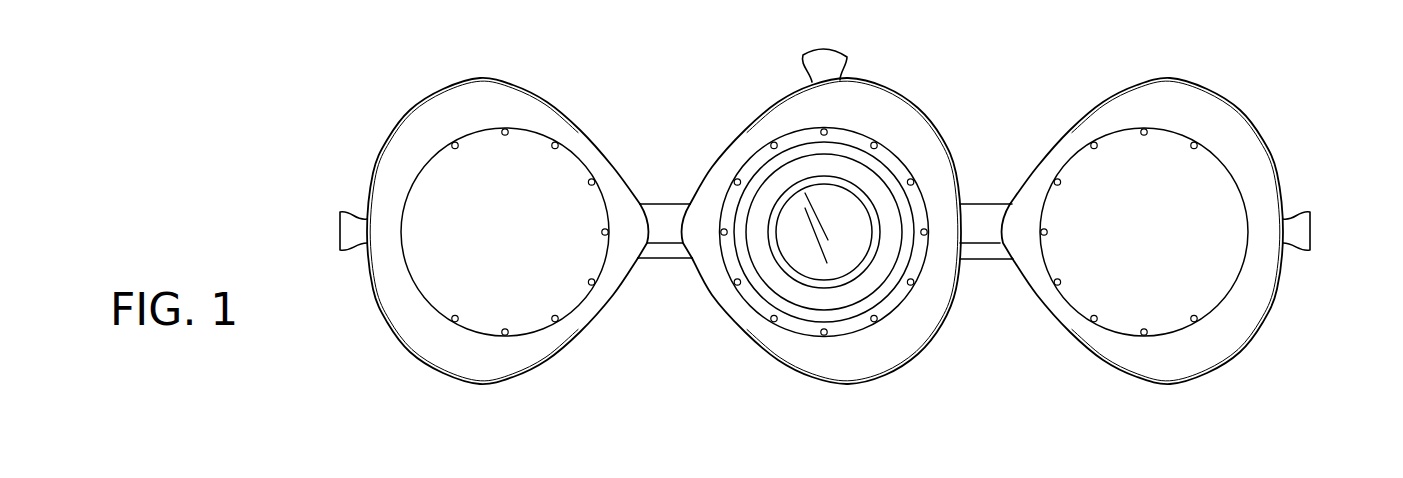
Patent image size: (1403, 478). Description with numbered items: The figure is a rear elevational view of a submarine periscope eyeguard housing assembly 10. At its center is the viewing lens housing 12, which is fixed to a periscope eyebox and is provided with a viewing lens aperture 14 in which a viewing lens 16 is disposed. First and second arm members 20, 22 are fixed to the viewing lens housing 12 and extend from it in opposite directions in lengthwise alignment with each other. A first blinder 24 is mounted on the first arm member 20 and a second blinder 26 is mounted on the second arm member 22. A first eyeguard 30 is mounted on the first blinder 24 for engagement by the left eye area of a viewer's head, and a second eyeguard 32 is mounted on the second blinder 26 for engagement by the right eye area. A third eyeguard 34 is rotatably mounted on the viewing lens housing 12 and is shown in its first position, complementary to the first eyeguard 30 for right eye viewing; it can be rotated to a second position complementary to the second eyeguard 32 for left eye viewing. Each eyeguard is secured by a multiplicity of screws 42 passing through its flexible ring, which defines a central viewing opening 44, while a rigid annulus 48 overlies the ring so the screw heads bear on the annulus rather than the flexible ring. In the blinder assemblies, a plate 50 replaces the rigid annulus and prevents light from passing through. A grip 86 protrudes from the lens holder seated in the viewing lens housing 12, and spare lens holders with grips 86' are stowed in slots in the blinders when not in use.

The submarine periscope eyeguard housing assembly 10 is at (640, 406).
The viewing lens housing 12 is at (875, 404).
The viewing lens aperture 14 is at (842, 192).
The viewing lens 16 is at (853, 223).
The first arm member 20 is at (667, 203).
The second arm member 22 is at (985, 244).
The first blinder 24 is at (372, 362).
The second blinder 26 is at (1268, 363).
The first eyeguard 30 is at (397, 115).
The second eyeguard 32 is at (1275, 147).
The third eyeguard 34 is at (917, 103).
The screws 42 is at (556, 322).
The central viewing opening 44 is at (795, 307).
The rigid annulus 48 is at (850, 135).
The plate 50 is at (522, 185).
The grip 86 is at (799, 53).
The grips 86' is at (831, 232).